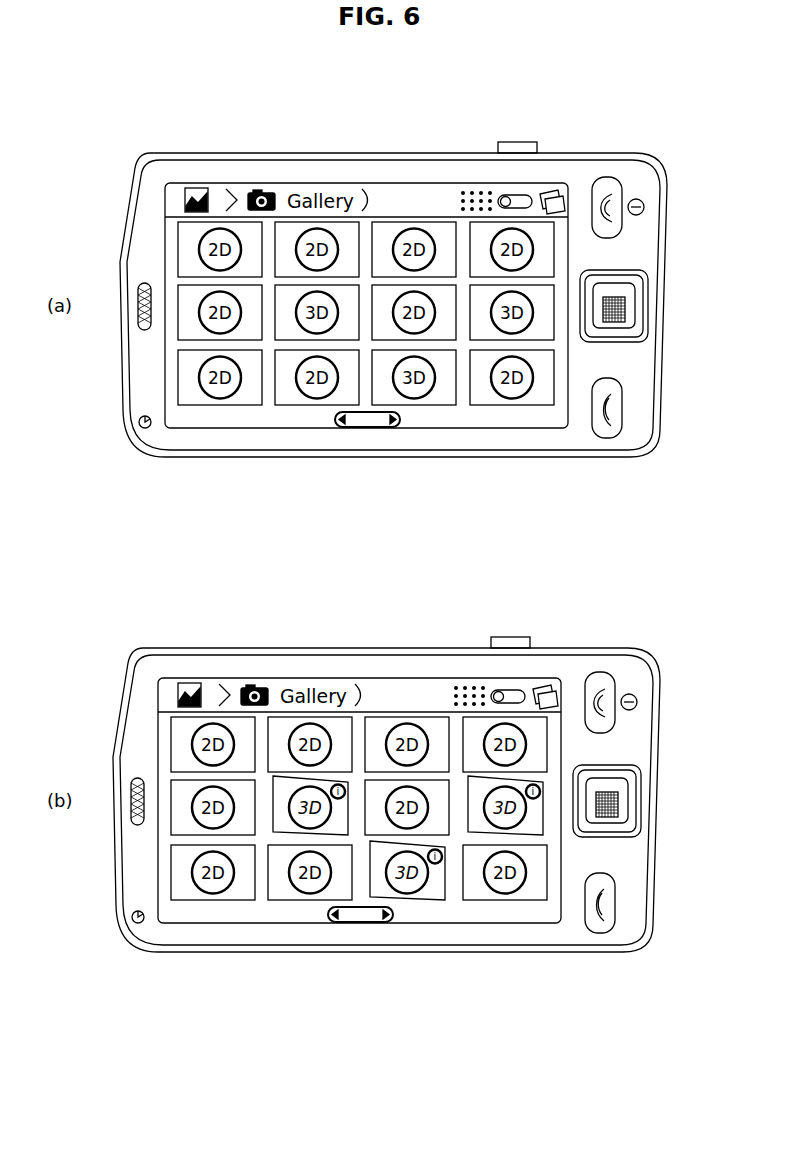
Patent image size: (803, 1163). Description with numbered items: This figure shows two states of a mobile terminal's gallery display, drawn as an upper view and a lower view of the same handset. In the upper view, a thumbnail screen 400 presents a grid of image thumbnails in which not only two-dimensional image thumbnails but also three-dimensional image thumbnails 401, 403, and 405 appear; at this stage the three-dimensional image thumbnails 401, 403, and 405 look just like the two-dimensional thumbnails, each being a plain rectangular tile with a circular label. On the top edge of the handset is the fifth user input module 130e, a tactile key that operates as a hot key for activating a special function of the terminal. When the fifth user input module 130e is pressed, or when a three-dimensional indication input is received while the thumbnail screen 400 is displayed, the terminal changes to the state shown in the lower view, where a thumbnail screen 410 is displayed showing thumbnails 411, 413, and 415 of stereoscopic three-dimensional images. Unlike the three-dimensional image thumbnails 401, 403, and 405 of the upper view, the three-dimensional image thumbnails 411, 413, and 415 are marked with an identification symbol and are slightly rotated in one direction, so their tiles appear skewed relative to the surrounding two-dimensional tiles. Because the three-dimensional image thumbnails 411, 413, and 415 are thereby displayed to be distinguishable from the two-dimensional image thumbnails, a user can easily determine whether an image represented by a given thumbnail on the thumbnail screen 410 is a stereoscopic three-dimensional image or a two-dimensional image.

The thumbnail screen 400 is at (366, 313).
The fifth user input module 130e is at (518, 142).
The 3D image thumbnail 401 is at (347, 327).
The 3D image thumbnail 403 is at (443, 391).
The 3D image thumbnail 405 is at (543, 327).
The thumbnail screen 410 is at (359, 819).
The 3D image thumbnail 411 is at (310, 909).
The 3D image thumbnail 413 is at (407, 942).
The 3D image thumbnail 415 is at (505, 907).